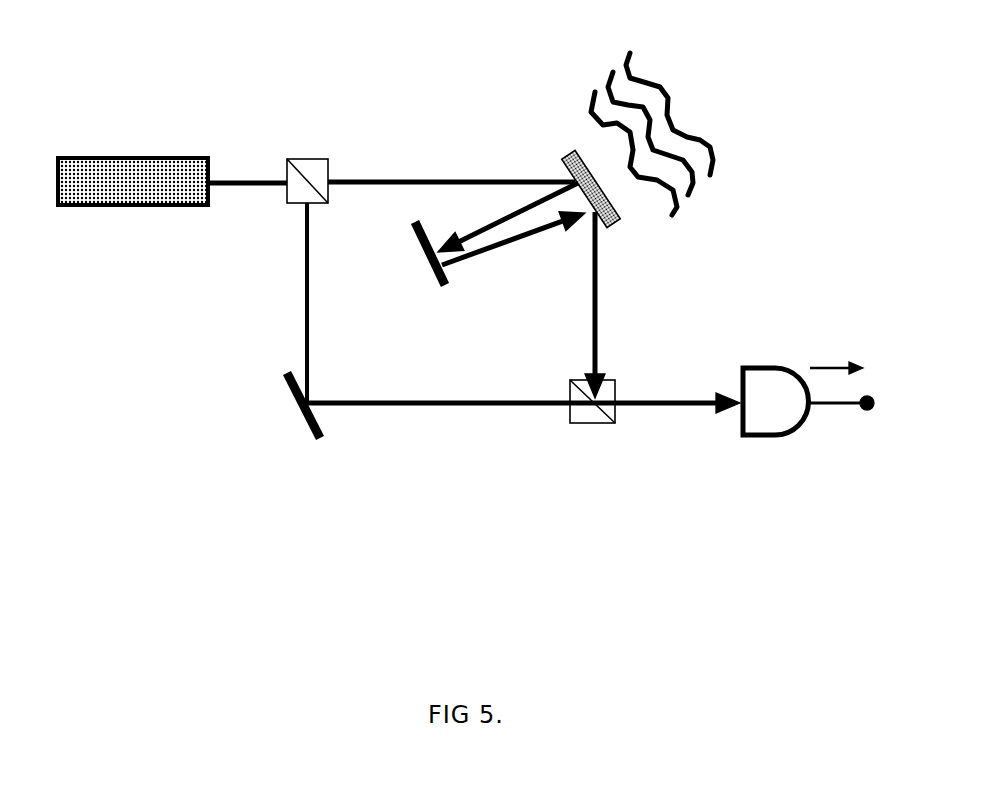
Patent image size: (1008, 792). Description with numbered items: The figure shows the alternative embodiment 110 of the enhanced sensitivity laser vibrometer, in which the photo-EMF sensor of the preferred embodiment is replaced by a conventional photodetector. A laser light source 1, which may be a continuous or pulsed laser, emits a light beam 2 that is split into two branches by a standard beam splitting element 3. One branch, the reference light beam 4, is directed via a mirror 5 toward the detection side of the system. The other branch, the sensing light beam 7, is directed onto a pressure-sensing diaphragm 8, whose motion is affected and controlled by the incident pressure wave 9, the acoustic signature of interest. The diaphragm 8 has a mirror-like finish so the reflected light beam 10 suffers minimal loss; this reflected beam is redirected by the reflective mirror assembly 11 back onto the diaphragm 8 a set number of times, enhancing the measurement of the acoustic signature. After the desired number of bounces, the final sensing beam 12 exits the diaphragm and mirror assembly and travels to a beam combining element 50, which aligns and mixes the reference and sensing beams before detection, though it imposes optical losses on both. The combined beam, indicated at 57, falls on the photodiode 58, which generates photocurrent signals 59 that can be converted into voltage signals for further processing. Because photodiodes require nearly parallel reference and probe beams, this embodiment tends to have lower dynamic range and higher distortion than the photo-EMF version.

The laser light source 1 is at (109, 132).
The light beam 2 is at (247, 150).
The beam splitting element 3 is at (299, 134).
The reference light beam 4 is at (270, 309).
The mirror 5 is at (260, 395).
The sensing light beam 7 is at (447, 152).
The diaphragm 8 is at (644, 240).
The incident pressure wave 9 is at (554, 84).
The reflected light beam 10 is at (495, 191).
The reflective mirror assembly 11 is at (406, 277).
The final sensing beam 12 is at (627, 318).
The beam combining element 50 is at (599, 456).
The combined beam 57 is at (684, 444).
The photodiode 58 is at (769, 472).
The photocurrent signals 59 is at (837, 334).
The alternative embodiment 110 is at (150, 498).